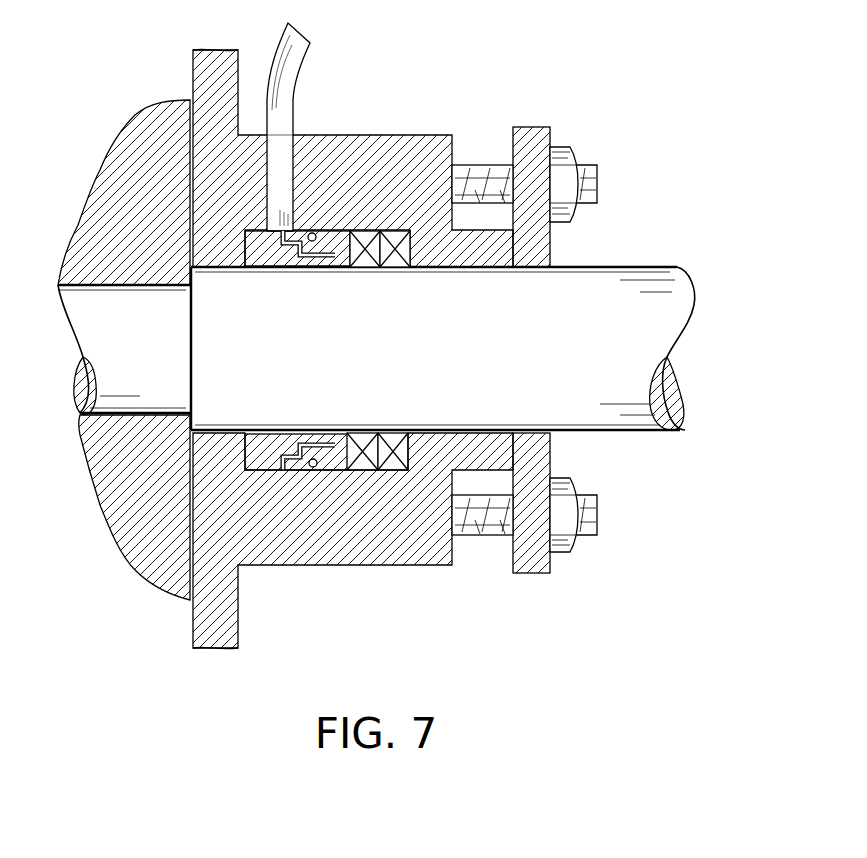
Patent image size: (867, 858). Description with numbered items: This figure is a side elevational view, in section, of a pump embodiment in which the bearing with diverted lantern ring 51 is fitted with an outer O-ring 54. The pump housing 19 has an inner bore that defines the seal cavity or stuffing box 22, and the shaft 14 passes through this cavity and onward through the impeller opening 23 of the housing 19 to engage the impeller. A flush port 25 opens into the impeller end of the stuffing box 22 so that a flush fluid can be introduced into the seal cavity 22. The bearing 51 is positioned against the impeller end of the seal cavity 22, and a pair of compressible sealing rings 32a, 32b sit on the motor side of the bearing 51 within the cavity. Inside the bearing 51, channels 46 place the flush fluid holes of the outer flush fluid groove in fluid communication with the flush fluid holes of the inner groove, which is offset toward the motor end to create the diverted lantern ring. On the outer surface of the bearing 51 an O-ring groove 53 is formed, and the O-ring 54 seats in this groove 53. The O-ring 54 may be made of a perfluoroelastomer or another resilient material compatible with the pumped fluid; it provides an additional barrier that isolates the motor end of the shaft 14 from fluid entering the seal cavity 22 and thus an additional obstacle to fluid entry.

The shaft 14 is at (658, 285).
The housing 19 is at (445, 135).
The seal cavity 22 is at (548, 437).
The impeller opening 23 is at (190, 293).
The flush port 25 is at (300, 65).
The compressible sealing ring 32a is at (370, 268).
The compressible sealing ring 32b is at (400, 268).
The channel 46 is at (314, 241).
The bearing with diverted lantern ring 51 is at (246, 256).
The O-ring groove 53 is at (305, 240).
The O-ring 54 is at (313, 503).